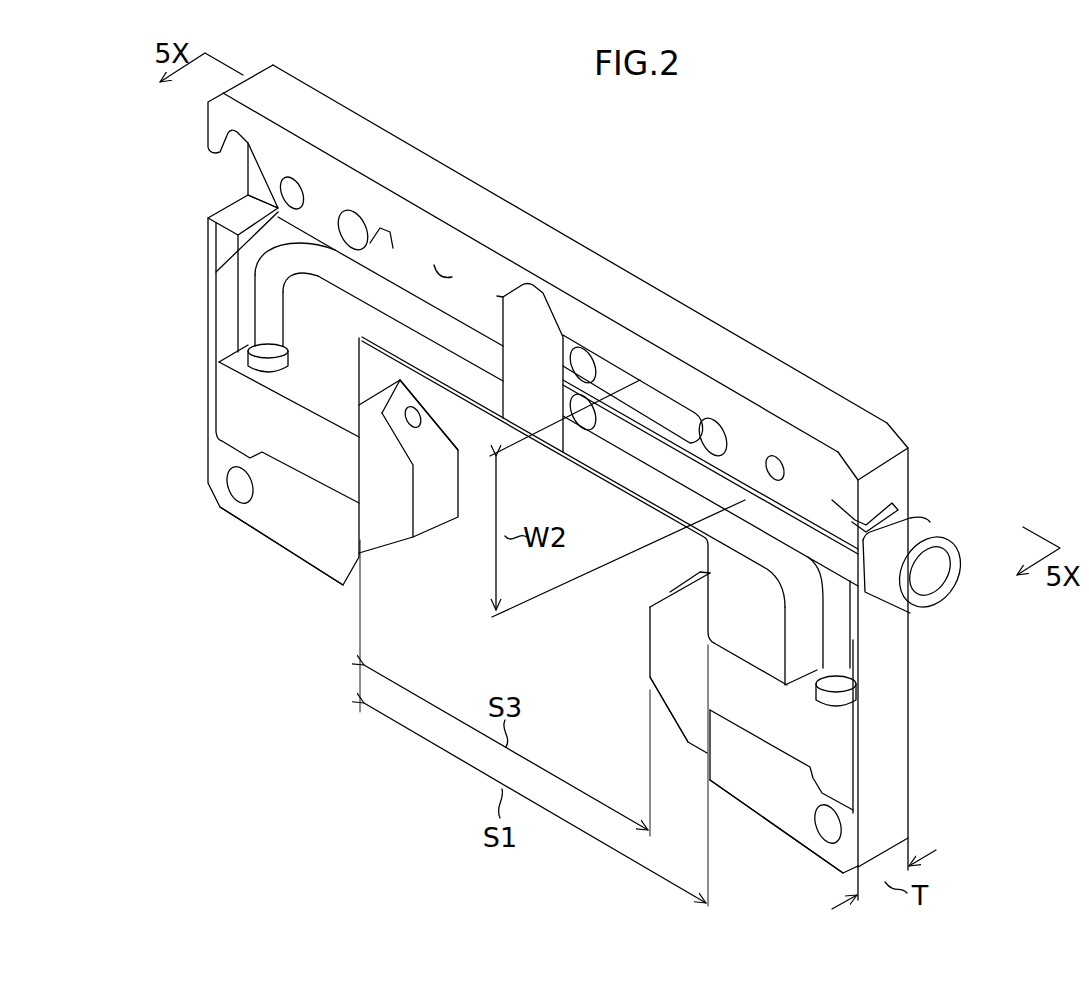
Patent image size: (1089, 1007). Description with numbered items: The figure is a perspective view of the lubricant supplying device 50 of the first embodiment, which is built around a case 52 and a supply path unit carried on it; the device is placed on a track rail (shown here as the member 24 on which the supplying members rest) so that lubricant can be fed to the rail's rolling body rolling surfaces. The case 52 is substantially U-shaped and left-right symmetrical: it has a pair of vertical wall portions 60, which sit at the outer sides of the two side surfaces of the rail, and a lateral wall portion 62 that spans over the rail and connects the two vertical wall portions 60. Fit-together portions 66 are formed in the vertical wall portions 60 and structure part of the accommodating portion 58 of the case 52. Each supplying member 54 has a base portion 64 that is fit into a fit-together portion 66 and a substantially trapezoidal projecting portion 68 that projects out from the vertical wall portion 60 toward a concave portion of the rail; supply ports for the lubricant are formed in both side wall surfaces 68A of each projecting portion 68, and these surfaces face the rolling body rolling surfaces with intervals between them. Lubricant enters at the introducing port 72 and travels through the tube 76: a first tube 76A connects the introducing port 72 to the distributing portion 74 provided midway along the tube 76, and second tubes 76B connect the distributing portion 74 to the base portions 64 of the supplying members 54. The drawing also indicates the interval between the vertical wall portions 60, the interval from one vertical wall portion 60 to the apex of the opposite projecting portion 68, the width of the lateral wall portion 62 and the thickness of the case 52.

The plate-shaped member (workpiece) 24 is at (392, 402).
The holding device 50 is at (928, 412).
The case 52 is at (912, 470).
The supplying member 54 is at (403, 566).
The accommodating portion 58 is at (503, 317).
The vertical wall portion 60 is at (296, 562).
The lateral wall portion 62 is at (668, 297).
The base portion 64 is at (296, 470).
The fit-together portion 66 is at (302, 420).
The projecting portion 68 is at (425, 522).
The side wall surface 68A is at (435, 435).
The introducing port 72 is at (928, 523).
The distributing portion 74 is at (490, 312).
The tube 76 is at (678, 462).
The first tube 76A is at (627, 407).
The second tube 76B is at (405, 283).